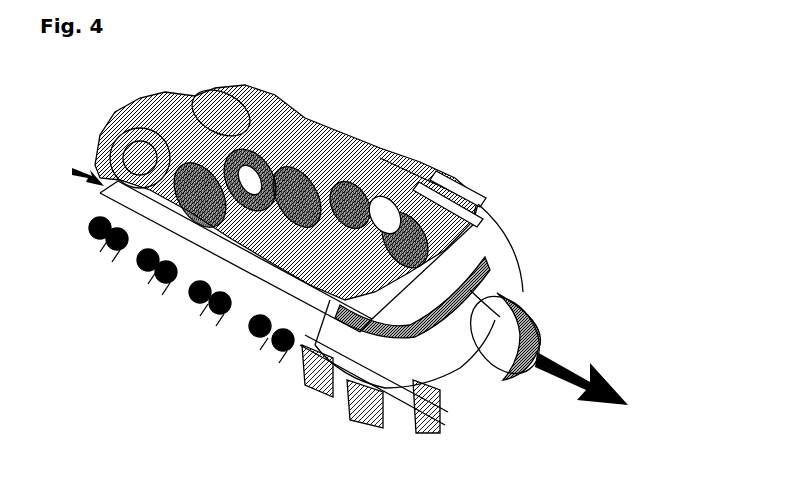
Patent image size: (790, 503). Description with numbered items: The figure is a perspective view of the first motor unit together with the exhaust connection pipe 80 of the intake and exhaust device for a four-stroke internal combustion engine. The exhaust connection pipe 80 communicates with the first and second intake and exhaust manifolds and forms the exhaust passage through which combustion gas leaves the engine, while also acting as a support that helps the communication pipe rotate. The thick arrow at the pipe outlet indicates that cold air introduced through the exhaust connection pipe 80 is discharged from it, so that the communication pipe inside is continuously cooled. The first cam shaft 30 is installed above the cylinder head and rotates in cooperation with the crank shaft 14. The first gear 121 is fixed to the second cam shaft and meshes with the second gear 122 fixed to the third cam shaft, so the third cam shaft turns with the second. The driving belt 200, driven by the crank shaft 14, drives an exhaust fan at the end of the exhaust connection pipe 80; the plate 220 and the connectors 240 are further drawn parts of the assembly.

The crank shaft 14 is at (397, 410).
The first cam shaft 30 is at (268, 142).
The exhaust connection pipe 80 is at (500, 242).
The first gear 121 is at (390, 215).
The second gear 122 is at (352, 205).
The driving belt 200 is at (448, 400).
The mounting plate 220 is at (458, 190).
The connector 240 is at (290, 355).